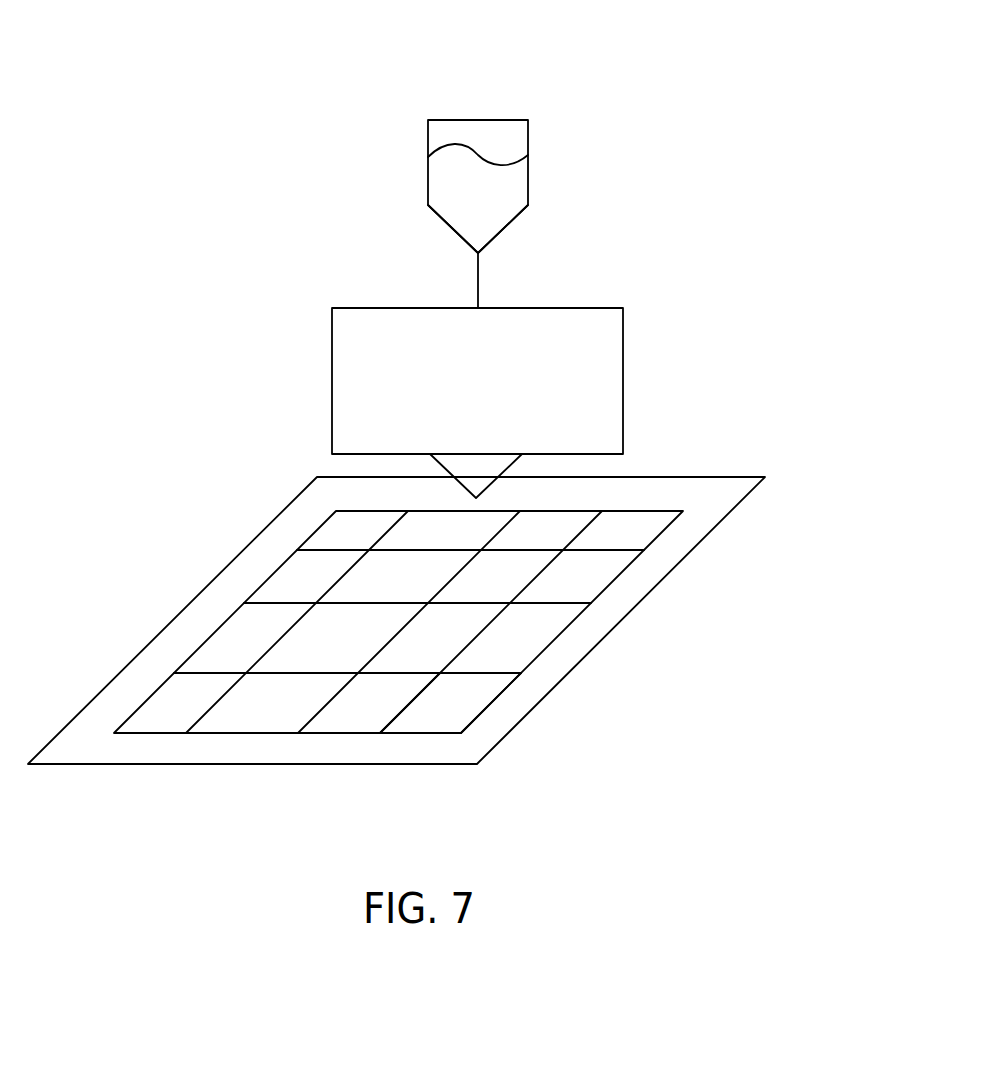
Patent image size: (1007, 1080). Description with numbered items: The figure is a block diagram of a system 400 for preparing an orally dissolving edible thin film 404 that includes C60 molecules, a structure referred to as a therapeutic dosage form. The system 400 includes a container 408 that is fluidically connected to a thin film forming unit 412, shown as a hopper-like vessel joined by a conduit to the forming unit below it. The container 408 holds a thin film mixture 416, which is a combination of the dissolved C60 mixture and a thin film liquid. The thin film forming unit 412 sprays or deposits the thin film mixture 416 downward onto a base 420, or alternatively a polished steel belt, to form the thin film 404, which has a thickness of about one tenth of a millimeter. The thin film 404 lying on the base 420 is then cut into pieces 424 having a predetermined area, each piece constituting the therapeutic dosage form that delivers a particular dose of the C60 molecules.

The system 400 is at (671, 89).
The thin film 404 is at (310, 532).
The container 408 is at (440, 117).
The thin film forming unit 412 is at (367, 307).
The thin film mixture 416 is at (488, 212).
The base 420 is at (617, 631).
The pieces 424 is at (463, 703).